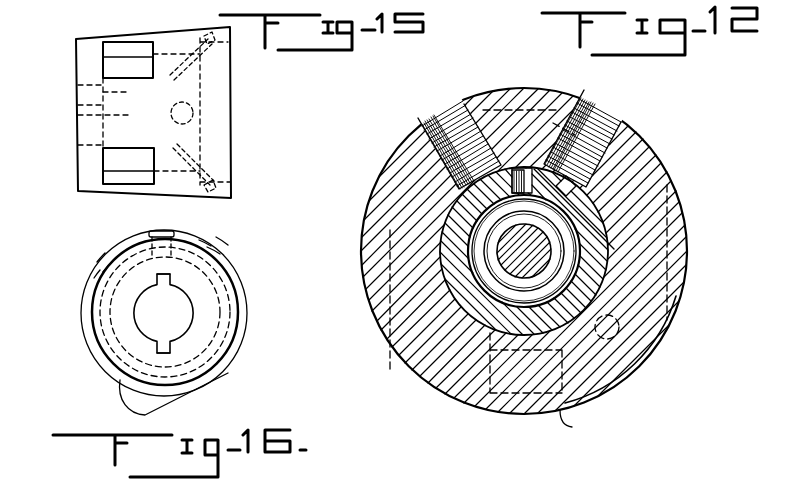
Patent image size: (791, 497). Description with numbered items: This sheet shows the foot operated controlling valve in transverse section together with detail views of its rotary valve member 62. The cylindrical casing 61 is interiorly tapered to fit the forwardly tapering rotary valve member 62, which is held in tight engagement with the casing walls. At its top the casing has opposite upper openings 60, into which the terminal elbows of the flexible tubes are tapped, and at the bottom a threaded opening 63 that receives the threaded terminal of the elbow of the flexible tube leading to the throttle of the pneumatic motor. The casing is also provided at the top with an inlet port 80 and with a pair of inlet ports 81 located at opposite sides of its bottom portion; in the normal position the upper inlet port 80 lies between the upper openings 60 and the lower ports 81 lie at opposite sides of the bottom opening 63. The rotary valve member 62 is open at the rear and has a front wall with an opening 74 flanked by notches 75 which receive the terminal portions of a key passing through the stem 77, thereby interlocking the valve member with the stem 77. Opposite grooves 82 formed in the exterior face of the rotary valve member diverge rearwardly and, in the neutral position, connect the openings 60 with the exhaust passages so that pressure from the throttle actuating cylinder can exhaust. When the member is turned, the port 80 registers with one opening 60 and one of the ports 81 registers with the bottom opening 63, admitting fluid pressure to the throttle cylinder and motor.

In FIG. 12, the upper openings 60 is at (603, 105).
In FIG. 16, the cylindrical casing 61 is at (164, 313).
In FIG. 12, the cylindrical casing 61 is at (685, 228).
In FIG. 16, the rotary valve member 62 is at (240, 297).
In FIG. 12, the rotary valve member 62 is at (587, 260).
In FIG. 12, the threaded opening 63 is at (618, 365).
In FIG. 15, the opening 74 is at (132, 97).
In FIG. 16, the opening 74 is at (142, 325).
In FIG. 15, the notches 75 is at (162, 116).
In FIG. 16, the notches 75 is at (168, 347).
In FIG. 12, the stem 77 is at (503, 252).
In FIG. 16, the inlet port 80 is at (173, 233).
In FIG. 12, the inlet port 80 is at (518, 170).
In FIG. 15, the inlet ports 81 is at (103, 153).
In FIG. 16, the inlet ports 81 is at (226, 373).
In FIG. 12, the inlet ports 81 is at (688, 298).
In FIG. 15, the grooves 82 is at (252, 158).
In FIG. 12, the grooves 82 is at (573, 185).